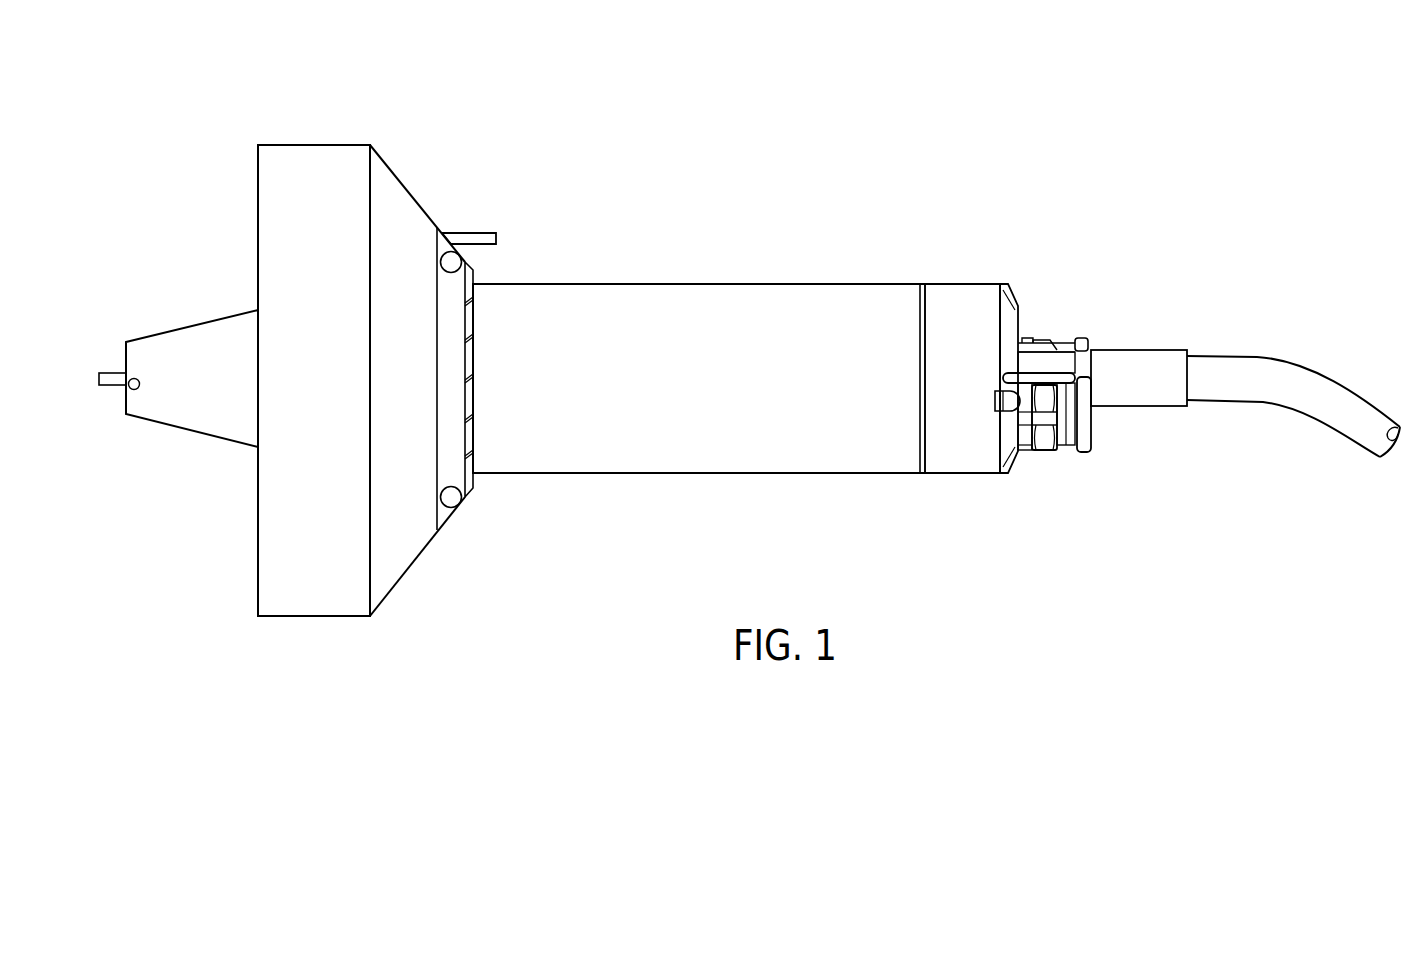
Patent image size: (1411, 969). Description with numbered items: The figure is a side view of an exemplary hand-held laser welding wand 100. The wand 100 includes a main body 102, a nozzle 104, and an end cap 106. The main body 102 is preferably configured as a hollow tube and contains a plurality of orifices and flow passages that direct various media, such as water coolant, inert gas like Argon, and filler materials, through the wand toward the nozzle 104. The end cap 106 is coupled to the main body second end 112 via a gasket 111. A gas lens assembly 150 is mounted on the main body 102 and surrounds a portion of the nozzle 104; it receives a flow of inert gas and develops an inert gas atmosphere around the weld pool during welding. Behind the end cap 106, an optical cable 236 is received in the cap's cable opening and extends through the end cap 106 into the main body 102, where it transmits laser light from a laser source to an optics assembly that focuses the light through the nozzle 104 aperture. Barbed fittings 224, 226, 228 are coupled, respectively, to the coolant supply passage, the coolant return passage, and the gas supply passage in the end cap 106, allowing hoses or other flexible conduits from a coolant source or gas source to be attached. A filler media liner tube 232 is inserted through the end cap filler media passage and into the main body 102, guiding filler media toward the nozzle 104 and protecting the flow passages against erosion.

The hand-held laser welding wand 100 is at (749, 318).
The main body 102 is at (622, 287).
The nozzle 104 is at (181, 326).
The end cap 106 is at (970, 287).
The gasket 111 is at (925, 462).
The second end 112 is at (922, 283).
The gas lens assembly 150 is at (377, 337).
The barbed fitting 224 is at (1085, 340).
The barbed fitting 226 is at (1095, 390).
The barbed fitting 228 is at (1093, 427).
The filler media liner tube 232 is at (1048, 380).
The optical cable 236 is at (1257, 360).